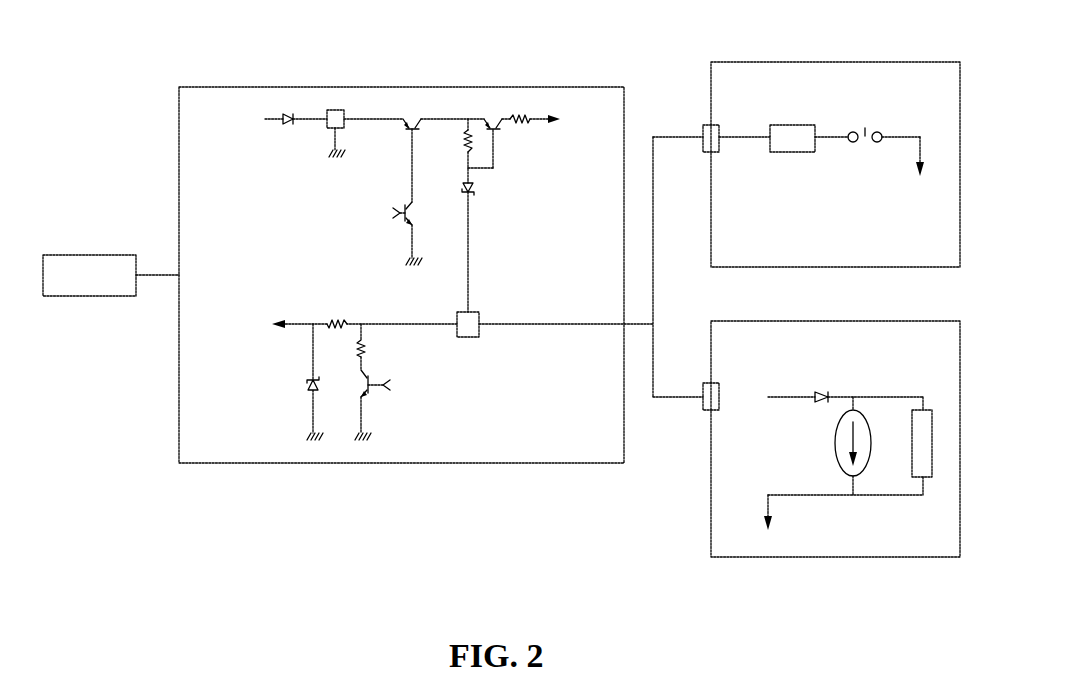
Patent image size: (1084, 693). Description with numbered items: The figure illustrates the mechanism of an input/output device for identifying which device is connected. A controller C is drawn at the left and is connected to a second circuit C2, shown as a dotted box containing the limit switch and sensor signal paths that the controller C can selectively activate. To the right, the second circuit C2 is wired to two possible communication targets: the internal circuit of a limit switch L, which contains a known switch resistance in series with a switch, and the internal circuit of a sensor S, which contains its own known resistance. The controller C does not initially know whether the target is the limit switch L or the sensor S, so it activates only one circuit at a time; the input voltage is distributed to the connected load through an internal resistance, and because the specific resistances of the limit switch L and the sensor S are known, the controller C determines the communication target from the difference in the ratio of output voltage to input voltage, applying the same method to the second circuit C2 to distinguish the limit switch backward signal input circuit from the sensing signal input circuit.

The controller C is at (90, 255).
The second circuit C2 is at (433, 463).
The limit switch L is at (811, 62).
The sensor S is at (711, 527).